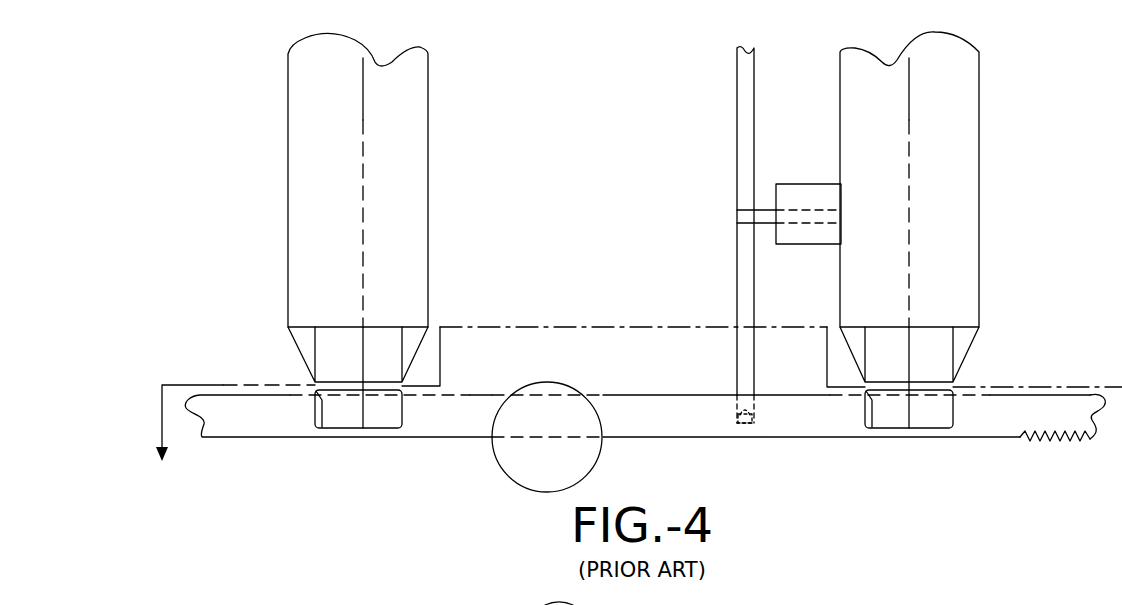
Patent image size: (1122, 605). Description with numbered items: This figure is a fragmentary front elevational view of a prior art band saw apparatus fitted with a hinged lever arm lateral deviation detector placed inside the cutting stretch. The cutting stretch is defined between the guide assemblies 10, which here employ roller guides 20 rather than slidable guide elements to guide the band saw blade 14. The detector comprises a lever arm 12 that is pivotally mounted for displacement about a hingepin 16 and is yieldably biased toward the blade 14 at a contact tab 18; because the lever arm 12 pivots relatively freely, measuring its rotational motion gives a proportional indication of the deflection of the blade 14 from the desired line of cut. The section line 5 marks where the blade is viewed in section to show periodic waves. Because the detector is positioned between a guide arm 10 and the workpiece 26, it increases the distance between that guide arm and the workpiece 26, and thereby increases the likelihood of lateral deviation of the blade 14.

The section line 5- 5 is at (231, 437).
The guide assemblies 10 is at (829, 108).
The lever arm 12 is at (729, 270).
The band saw blade 14 is at (1002, 406).
The hingepin 16 is at (765, 200).
The contact tab 18 is at (746, 422).
The roller guides 20 is at (890, 420).
The workpiece 26 is at (500, 468).